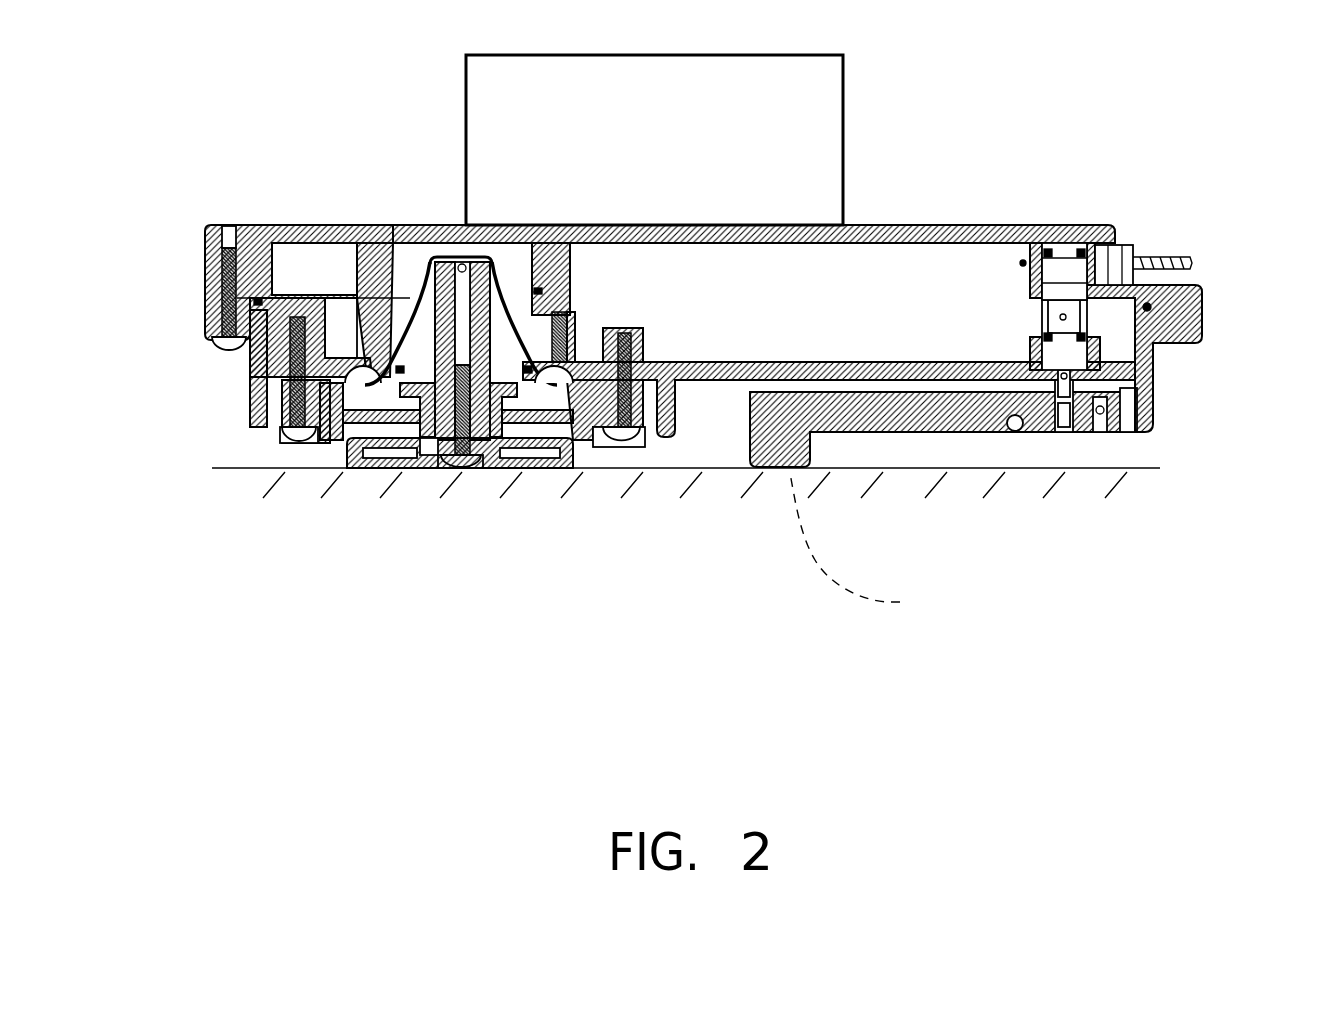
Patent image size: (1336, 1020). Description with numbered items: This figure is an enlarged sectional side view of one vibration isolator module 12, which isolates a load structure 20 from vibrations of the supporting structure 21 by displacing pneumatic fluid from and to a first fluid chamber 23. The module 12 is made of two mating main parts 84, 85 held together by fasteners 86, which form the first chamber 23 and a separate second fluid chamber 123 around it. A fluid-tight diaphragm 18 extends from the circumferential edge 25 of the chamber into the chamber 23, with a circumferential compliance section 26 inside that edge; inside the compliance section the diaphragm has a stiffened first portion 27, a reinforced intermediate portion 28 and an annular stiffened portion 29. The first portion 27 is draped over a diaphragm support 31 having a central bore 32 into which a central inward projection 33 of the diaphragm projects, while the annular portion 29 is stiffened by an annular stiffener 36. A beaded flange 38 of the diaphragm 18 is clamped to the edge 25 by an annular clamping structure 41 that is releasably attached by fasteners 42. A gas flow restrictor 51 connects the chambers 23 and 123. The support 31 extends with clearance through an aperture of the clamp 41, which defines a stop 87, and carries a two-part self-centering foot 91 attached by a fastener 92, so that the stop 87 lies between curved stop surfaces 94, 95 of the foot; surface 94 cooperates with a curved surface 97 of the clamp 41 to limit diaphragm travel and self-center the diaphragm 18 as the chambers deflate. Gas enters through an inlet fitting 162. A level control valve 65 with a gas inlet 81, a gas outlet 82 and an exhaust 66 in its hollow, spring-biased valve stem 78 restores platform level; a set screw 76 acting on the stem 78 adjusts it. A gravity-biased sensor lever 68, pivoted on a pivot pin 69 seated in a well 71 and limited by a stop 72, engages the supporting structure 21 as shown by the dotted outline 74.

The vibration isolator module 12 is at (856, 225).
The diaphragm 18 is at (357, 260).
The load structure 20 is at (785, 188).
The supporting structure 21 is at (720, 470).
The fluid chamber 23 is at (392, 225).
The circumferential edge 25 is at (630, 347).
The compliance section 26 is at (327, 440).
The first diaphragm portion 27 is at (437, 224).
The intermediate diaphragm portion 28 is at (375, 295).
The annular stiffened portion 29 is at (335, 352).
The diaphragm support 31 is at (403, 223).
The central bore 32 is at (462, 288).
The central inward projection 33 is at (500, 255).
The annular stiffener 36 is at (584, 345).
The beaded flange 38 is at (282, 400).
The annular clamping structure 41 is at (297, 445).
The fasteners 42 is at (318, 442).
The gas flow restrictor 51 is at (566, 340).
The level control valve 65 is at (930, 225).
The gas exhaust 66 is at (1038, 360).
The sensor lever 68 is at (917, 434).
The pivot pin 69 is at (1128, 402).
The well 71 is at (1128, 434).
The stop 72 is at (1007, 434).
The dotted outline 74 is at (862, 546).
The set screw 76 is at (1063, 436).
The valve stem 78 is at (1075, 388).
The gas inlet 81 is at (1068, 225).
The gas outlet 82 is at (1047, 325).
The main part 84 is at (248, 375).
The main part 85 is at (270, 225).
The fasteners 86 is at (229, 225).
The stop 87 is at (535, 428).
The self-centering foot 91 is at (430, 448).
The fastener 92 is at (464, 468).
The curved stop surface 94 is at (352, 465).
The curved stop surface 95 is at (410, 425).
The curved surface 97 is at (574, 432).
The second fluid chamber 123 is at (823, 335).
The inlet fitting 162 is at (1167, 240).